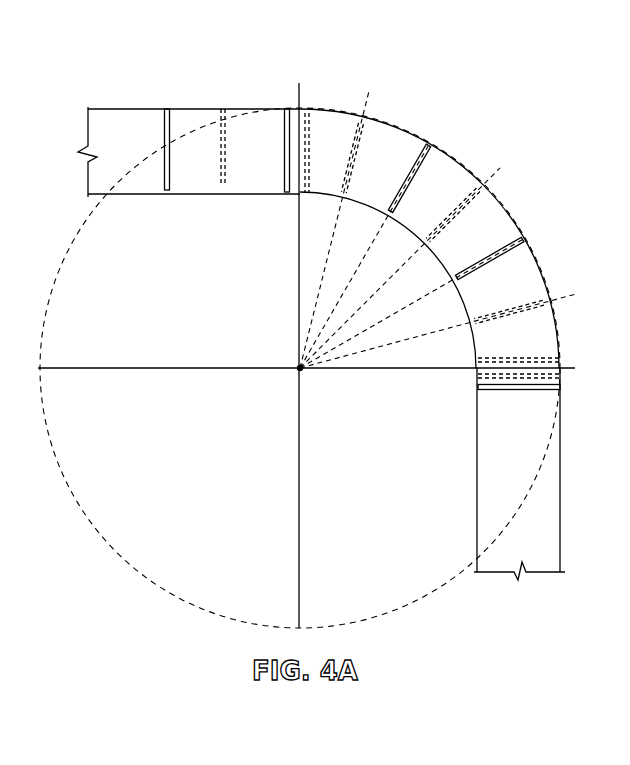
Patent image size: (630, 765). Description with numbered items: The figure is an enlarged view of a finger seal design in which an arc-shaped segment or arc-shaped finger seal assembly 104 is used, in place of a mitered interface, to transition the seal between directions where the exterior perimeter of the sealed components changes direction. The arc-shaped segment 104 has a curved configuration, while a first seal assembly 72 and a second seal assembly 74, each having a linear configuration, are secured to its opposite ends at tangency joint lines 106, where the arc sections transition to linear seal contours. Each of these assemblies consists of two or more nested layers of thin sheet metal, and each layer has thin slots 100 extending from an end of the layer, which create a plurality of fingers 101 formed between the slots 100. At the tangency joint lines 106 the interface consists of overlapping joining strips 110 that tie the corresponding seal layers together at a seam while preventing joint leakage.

The first seal assembly 72 is at (243, 128).
The second seal assembly 74 is at (488, 404).
The slots 100 is at (165, 172).
The fingers 101 is at (140, 128).
The arc-shaped finger seal assembly 104 is at (463, 177).
The tangency joint lines 106 is at (306, 92).
The overlapping joining strips 110 is at (482, 359).